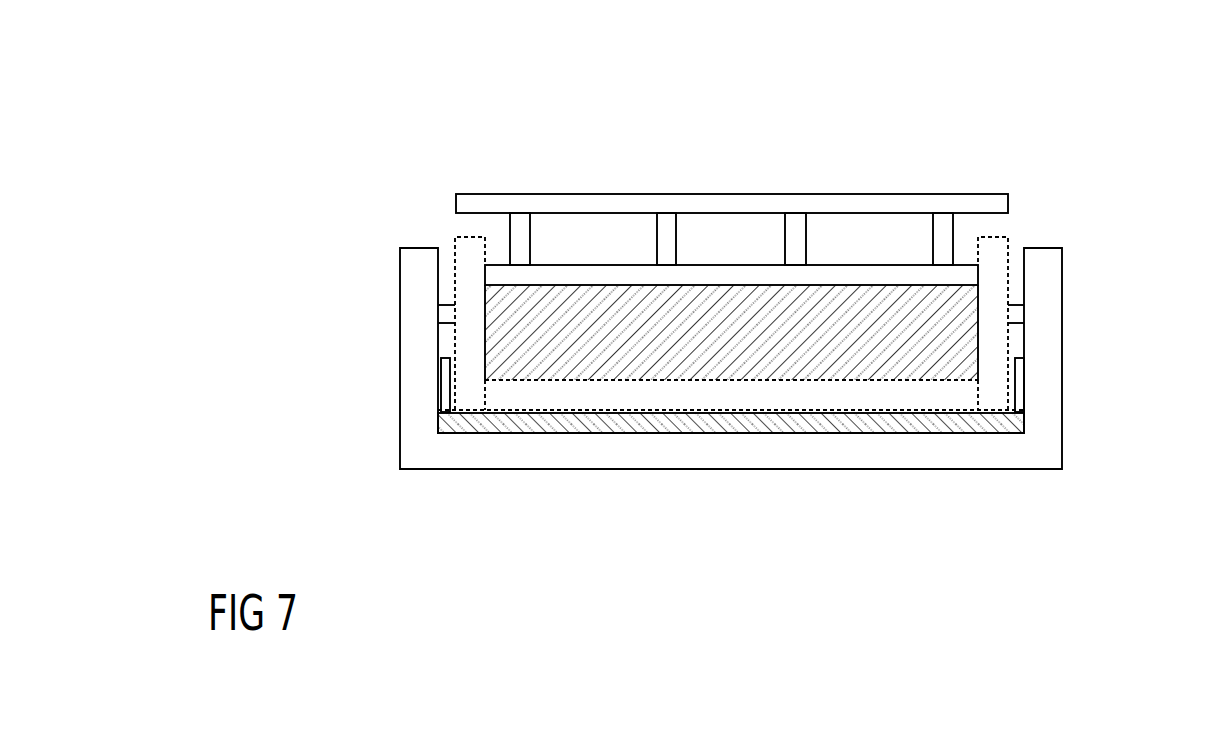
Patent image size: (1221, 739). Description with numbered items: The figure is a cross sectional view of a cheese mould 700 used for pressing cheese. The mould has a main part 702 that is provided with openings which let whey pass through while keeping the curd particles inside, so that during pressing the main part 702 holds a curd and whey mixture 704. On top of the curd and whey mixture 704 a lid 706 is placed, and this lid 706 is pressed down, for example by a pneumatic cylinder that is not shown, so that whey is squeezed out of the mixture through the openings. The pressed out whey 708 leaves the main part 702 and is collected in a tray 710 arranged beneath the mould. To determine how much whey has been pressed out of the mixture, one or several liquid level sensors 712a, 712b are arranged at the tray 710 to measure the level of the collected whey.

The mould 700 is at (318, 165).
The main part 702 is at (998, 253).
The curd and whey mixture 704 is at (925, 338).
The lid 706 is at (652, 207).
The pressed out whey 708 is at (513, 413).
The tray 710 is at (620, 453).
The liquid level sensor 712a is at (447, 395).
The liquid level sensor 712b is at (1018, 385).